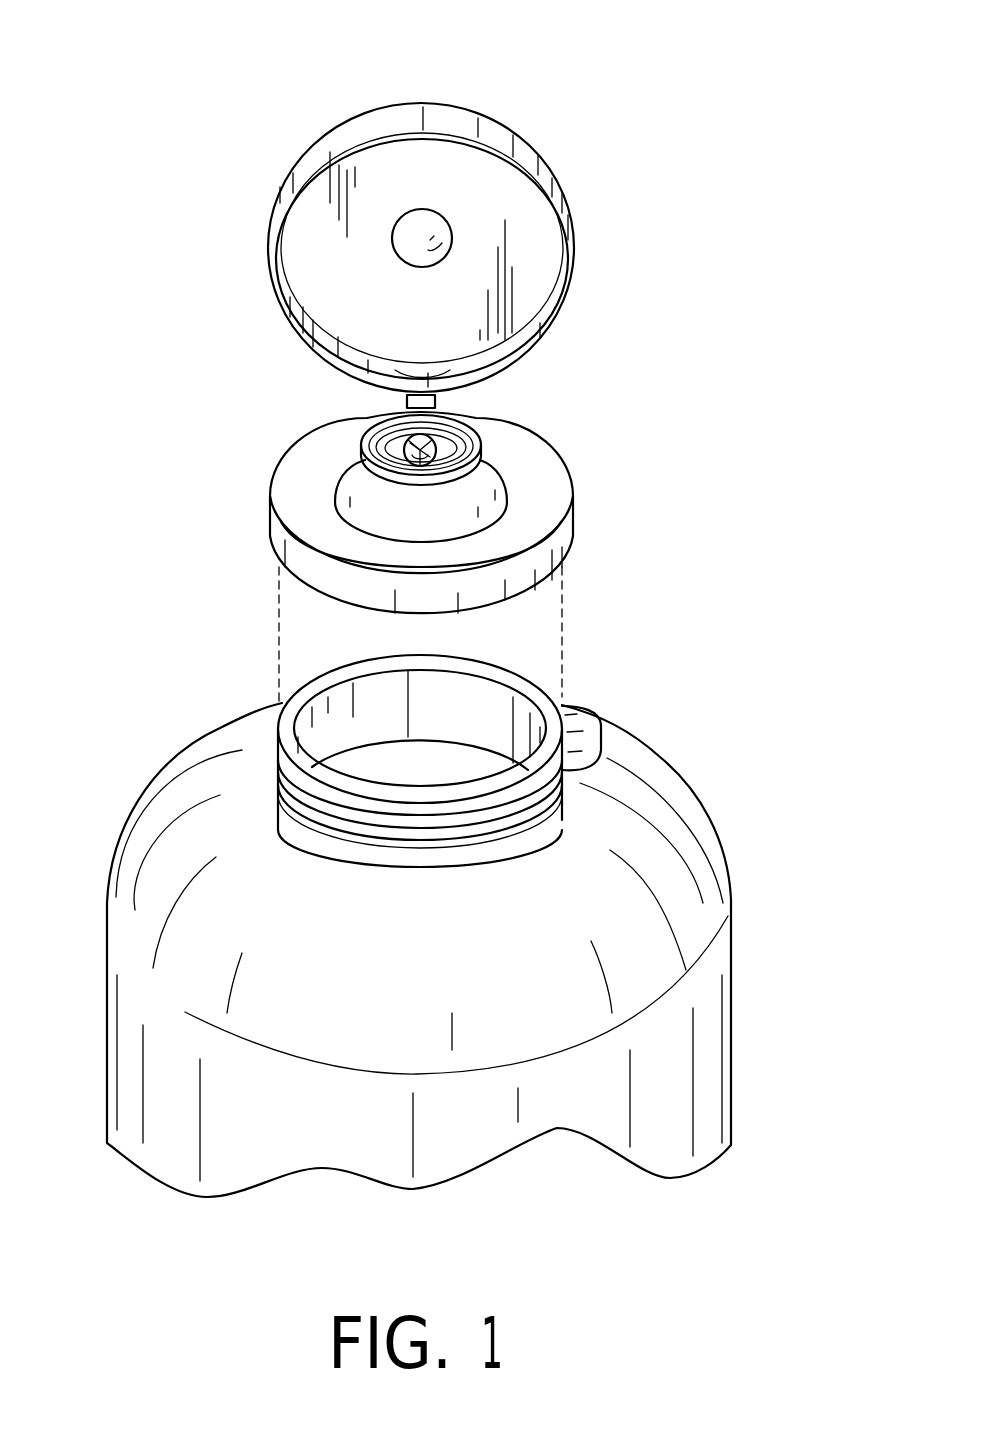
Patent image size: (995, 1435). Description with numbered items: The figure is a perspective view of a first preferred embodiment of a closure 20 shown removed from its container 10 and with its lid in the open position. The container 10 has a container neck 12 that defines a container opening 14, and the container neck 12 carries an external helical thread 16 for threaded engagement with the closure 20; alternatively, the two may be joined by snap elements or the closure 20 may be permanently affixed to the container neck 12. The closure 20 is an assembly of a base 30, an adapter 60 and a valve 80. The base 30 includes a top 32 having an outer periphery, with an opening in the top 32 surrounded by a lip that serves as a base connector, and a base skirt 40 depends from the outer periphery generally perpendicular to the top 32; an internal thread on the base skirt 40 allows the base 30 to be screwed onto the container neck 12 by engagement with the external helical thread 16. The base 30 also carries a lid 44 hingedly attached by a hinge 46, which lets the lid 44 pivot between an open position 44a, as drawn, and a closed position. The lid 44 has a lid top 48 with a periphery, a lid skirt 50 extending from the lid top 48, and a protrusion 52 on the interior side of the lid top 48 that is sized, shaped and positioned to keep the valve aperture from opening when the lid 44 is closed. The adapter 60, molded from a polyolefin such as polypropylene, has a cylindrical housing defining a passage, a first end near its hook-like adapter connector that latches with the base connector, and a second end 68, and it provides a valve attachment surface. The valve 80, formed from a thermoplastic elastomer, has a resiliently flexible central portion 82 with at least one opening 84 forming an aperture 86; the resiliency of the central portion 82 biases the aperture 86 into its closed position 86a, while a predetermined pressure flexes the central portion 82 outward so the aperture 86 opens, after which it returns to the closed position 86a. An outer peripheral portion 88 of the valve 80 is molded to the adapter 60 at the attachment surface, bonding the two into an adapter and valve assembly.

The container 10 is at (700, 803).
The container neck 12 is at (520, 678).
The container opening 14 is at (399, 762).
The external helical thread 16 is at (602, 722).
The closure 20 is at (100, 467).
The base 30 is at (577, 523).
The top 32 is at (318, 512).
The base skirt 40 is at (328, 585).
The lid 44 is at (533, 140).
The open position 44a is at (465, 88).
The hinge 46 is at (440, 405).
The lid top 48 is at (315, 265).
The lid skirt 50 is at (372, 122).
The protrusion 52 is at (405, 223).
The adapter 60 is at (360, 480).
The second end 68 is at (395, 440).
The valve 80 is at (475, 445).
The resiliently flexible central portion 82 is at (372, 458).
The opening 84 is at (483, 452).
The aperture 86 is at (405, 430).
The closed position 86a is at (432, 425).
The outer peripheral portion 88 is at (388, 450).